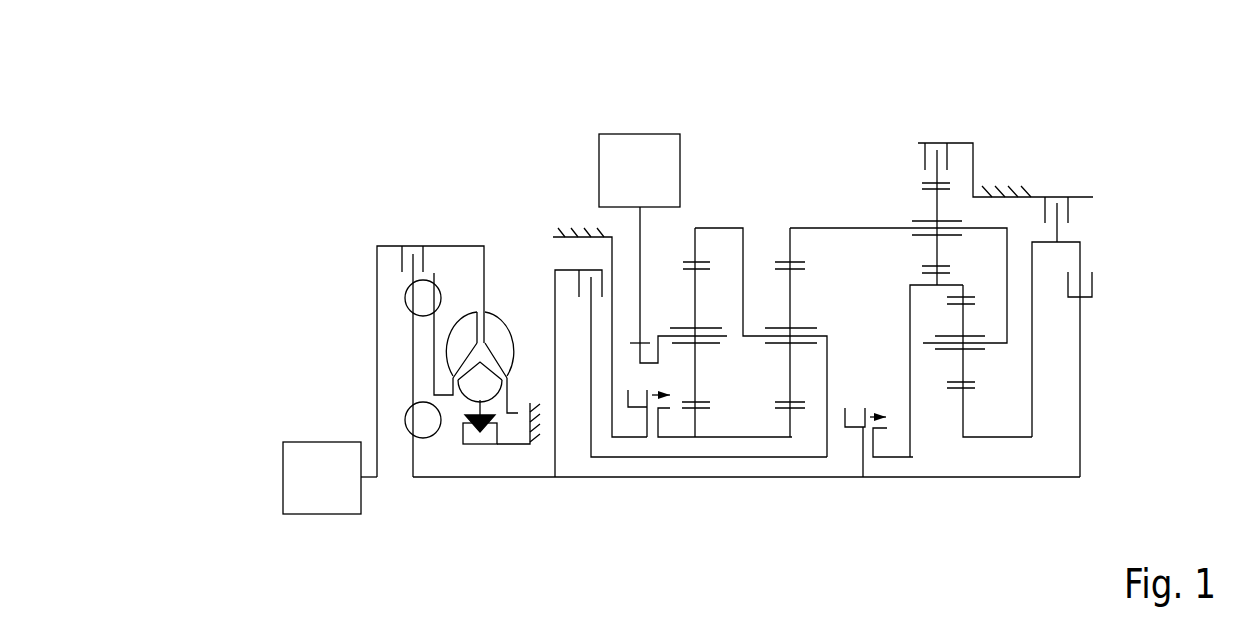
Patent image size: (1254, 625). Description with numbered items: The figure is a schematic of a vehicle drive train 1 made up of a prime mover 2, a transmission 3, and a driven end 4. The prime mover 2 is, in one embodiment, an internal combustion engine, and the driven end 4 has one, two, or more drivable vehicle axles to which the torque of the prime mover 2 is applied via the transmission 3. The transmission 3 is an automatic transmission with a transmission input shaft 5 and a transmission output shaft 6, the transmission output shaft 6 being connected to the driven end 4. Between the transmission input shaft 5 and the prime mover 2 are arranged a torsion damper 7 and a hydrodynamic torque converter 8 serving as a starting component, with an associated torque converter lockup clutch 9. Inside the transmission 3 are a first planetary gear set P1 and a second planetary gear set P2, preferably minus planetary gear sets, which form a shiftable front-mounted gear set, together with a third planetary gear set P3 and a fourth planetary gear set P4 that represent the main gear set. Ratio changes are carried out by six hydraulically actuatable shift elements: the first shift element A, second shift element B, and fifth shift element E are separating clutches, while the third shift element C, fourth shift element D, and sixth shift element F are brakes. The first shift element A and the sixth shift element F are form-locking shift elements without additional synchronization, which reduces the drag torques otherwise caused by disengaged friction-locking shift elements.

The vehicle drive train 1 is at (454, 146).
The prime mover 2 is at (310, 452).
The transmission 3 is at (823, 165).
The driven end 4 is at (635, 150).
The transmission input shaft 5 is at (450, 478).
The transmission output shaft 6 is at (637, 353).
The torsion damper 7 is at (420, 362).
The hydrodynamic torque converter 8 is at (500, 303).
The torque converter lockup clutch 9 is at (408, 243).
The first hydraulically actuatable shift element A is at (850, 432).
The second hydraulically actuatable shift element B is at (1099, 283).
The third hydraulically actuatable shift element C is at (1060, 192).
The fourth hydraulically actuatable shift element D is at (942, 140).
The fifth hydraulically actuatable shift element E is at (588, 262).
The sixth hydraulically actuatable shift element F is at (666, 417).
The first planetary gear set P1 is at (961, 450).
The second planetary gear set P2 is at (913, 204).
The third planetary gear set P3 is at (790, 216).
The fourth planetary gear set P4 is at (695, 216).